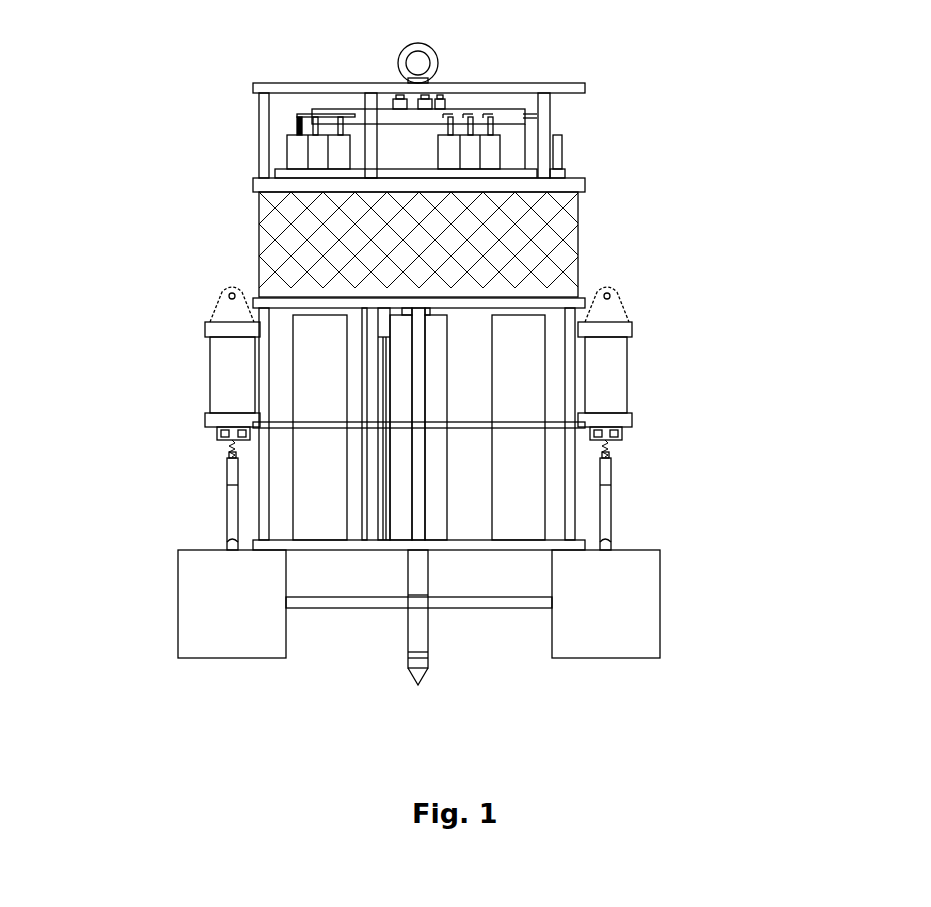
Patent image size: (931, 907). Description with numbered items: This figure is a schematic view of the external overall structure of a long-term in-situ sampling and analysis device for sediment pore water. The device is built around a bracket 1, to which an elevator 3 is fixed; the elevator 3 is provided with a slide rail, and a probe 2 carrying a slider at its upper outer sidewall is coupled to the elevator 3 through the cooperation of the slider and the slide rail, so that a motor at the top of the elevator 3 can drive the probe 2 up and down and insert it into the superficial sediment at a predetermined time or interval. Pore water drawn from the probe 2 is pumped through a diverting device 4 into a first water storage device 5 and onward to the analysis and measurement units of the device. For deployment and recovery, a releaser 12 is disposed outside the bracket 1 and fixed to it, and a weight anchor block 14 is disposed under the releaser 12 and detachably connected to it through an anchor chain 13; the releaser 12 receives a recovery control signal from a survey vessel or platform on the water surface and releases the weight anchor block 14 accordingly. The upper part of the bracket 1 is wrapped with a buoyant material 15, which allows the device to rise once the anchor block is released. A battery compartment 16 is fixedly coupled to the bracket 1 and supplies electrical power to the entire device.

The bracket 1 is at (585, 180).
The probe 2 is at (430, 638).
The elevator 3 is at (380, 380).
The diverting device 4 is at (510, 115).
The first water storage device 5 is at (500, 150).
The releaser 12 is at (628, 372).
The anchor chain 13 is at (618, 500).
The weight anchor block 14 is at (660, 605).
The buoyant material 15 is at (340, 247).
The battery compartment 16 is at (320, 478).